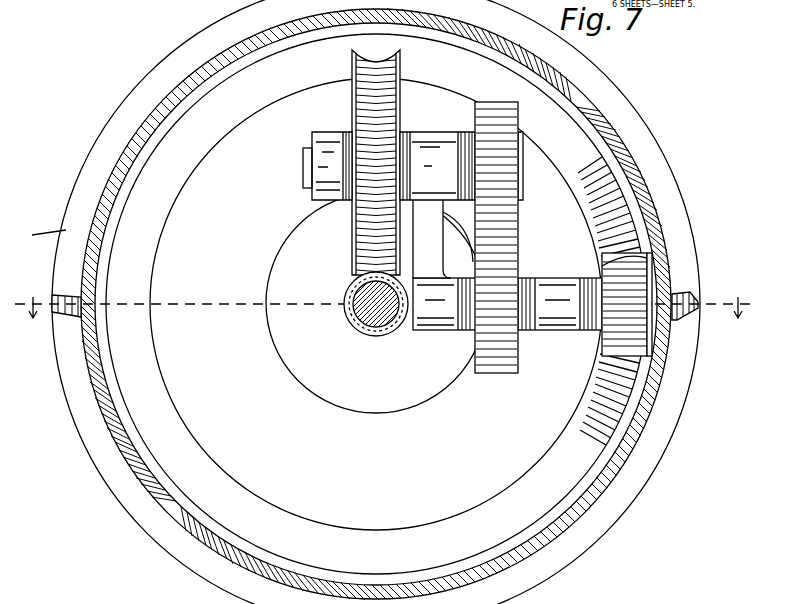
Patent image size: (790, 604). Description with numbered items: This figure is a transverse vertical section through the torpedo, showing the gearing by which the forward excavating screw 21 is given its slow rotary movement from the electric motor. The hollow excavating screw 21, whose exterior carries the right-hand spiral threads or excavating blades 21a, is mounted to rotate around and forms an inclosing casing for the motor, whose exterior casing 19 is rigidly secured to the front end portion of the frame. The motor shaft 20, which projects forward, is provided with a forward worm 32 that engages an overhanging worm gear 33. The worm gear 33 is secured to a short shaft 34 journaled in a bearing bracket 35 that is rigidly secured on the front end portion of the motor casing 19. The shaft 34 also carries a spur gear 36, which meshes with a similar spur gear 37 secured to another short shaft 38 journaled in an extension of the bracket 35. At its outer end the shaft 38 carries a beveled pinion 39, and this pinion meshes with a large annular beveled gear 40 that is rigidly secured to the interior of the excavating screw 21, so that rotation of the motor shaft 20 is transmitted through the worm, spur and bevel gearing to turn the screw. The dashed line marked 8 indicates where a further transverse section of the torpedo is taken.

The section line 8— 8 is at (391, 299).
The motor casing 19 is at (348, 382).
The motor shaft 20 is at (382, 312).
The excavating screw 21 is at (662, 372).
The spiral threads or excavating blades 21a is at (727, 285).
The worm 32 is at (347, 315).
The worm gear 33 is at (357, 242).
The short shaft 34 is at (305, 167).
The bearing bracket 35 is at (427, 235).
The spur gear 36 is at (490, 103).
The spur gear 37 is at (499, 370).
The short shaft 38 is at (652, 293).
The beveled pinion 39 is at (645, 255).
The annular beveled gear 40 is at (598, 447).